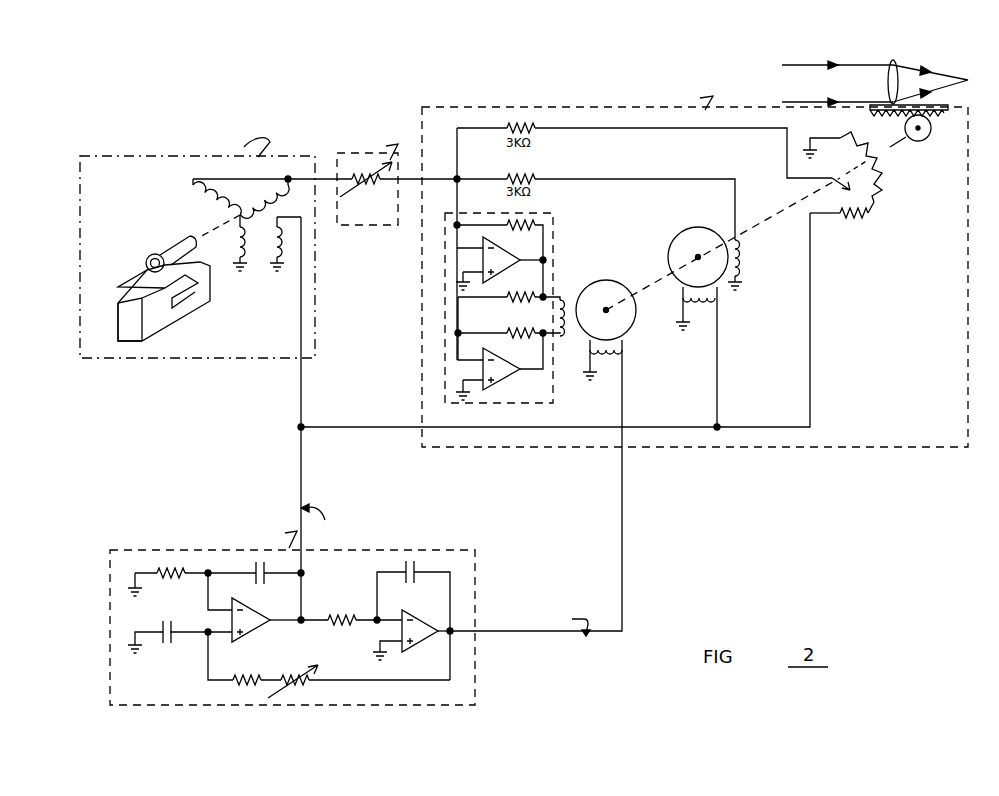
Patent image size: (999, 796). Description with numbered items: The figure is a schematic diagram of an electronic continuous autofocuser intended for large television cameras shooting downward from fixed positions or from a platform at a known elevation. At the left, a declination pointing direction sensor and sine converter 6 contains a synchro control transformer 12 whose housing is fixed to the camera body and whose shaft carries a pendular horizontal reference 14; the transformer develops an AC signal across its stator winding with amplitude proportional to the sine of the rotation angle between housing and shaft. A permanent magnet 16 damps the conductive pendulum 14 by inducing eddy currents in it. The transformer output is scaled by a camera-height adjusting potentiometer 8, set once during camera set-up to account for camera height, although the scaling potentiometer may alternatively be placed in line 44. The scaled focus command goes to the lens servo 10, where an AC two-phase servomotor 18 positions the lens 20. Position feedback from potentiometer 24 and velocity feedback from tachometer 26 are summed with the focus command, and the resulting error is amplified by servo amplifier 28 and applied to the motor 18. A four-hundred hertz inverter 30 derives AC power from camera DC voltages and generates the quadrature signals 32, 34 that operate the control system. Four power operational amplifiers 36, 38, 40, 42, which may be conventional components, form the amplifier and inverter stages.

The declination pointing direction sensor and sine converter 6 is at (112, 200).
The camera-height adjusting potentiometer 8 is at (357, 230).
The lens servo 10 is at (918, 421).
The synchro control transformer 12 is at (262, 272).
The pendular horizontal reference 14 is at (148, 268).
The permanent magnet 16 is at (118, 330).
The AC two-phase servomotor 18 is at (612, 280).
The lens 20 is at (896, 62).
The potentiometer 24 is at (878, 202).
The tachometer 26 is at (668, 245).
The servo amplifier 28 is at (558, 230).
The 400 Hz inverter 30 is at (110, 615).
The quadrature signal 32 is at (301, 485).
The quadrature signal 34 is at (626, 508).
The power operational amplifier 36 is at (478, 262).
The power operational amplifier 38 is at (480, 372).
The power operational amplifier 40 is at (265, 630).
The power operational amplifier 42 is at (418, 640).
The line 44 is at (302, 400).